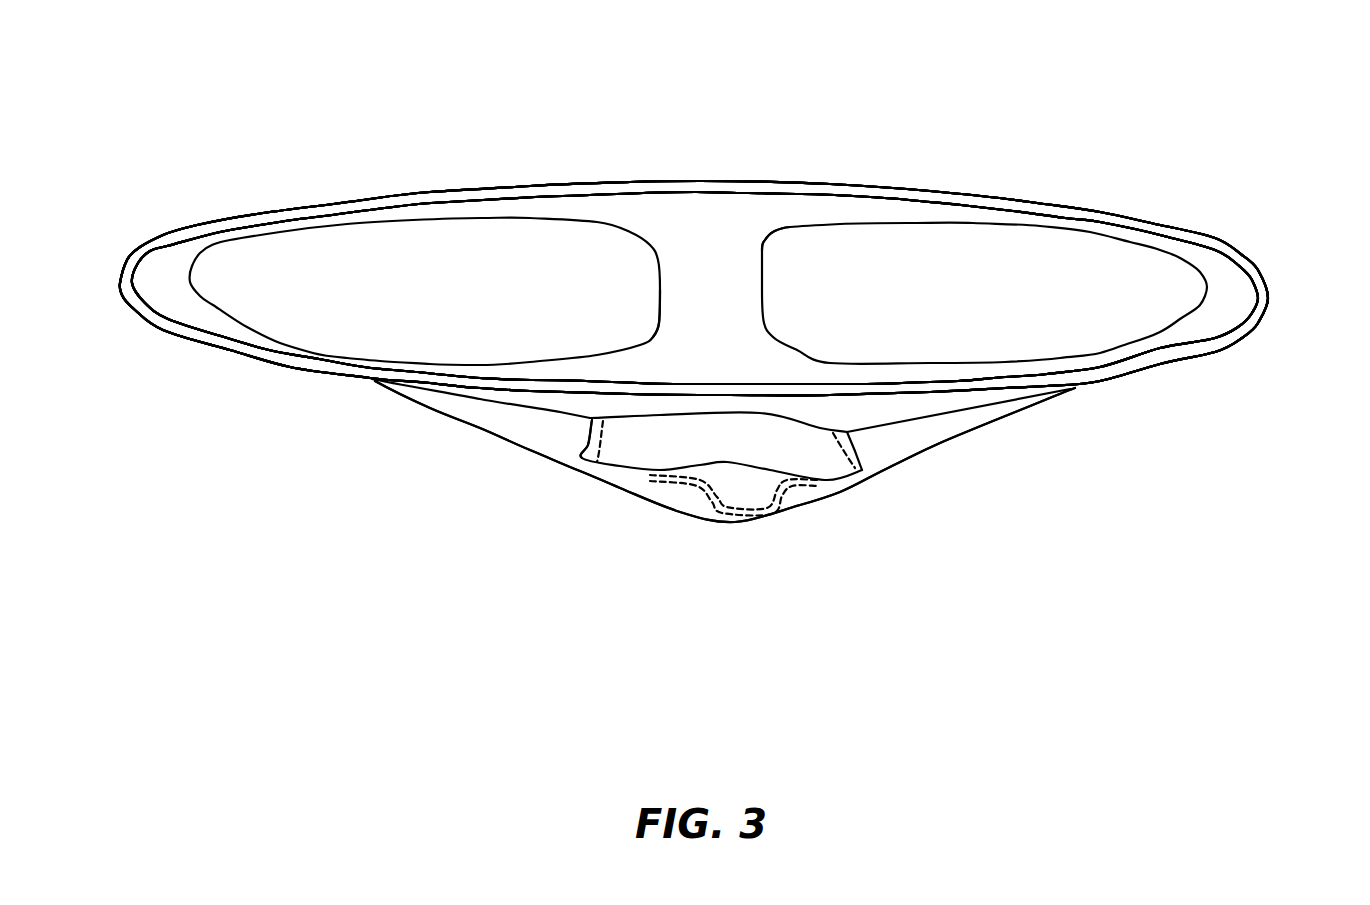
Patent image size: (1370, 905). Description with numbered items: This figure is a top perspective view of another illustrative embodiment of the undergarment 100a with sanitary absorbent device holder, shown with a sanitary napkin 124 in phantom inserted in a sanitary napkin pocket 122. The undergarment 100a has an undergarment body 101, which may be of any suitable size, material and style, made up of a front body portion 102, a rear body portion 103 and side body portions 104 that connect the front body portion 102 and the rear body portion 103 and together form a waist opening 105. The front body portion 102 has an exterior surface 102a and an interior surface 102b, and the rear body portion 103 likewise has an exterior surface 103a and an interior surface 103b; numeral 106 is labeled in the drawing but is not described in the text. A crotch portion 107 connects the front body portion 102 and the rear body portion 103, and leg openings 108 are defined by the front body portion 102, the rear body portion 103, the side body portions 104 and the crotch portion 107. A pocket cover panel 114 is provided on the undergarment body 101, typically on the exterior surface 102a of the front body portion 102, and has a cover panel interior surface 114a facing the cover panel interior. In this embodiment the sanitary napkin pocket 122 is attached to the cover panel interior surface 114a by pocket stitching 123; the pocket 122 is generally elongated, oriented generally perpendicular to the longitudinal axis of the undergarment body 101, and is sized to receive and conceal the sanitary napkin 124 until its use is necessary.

The undergarment 100a is at (342, 124).
The undergarment body 101 is at (1216, 241).
The front body portion 102 is at (512, 390).
The exterior surface 102a is at (300, 368).
The interior surface 102b is at (422, 373).
The rear body portion 103 is at (545, 190).
The exterior surface 103a is at (712, 180).
The interior surface 103b is at (725, 193).
The side body portions 104 is at (122, 285).
The waist opening 105 is at (168, 262).
The frame inner surface 106 is at (187, 326).
The crotch portion 107 is at (745, 282).
The leg openings 108 is at (396, 266).
The pocket cover panel 114 is at (642, 502).
The cover panel interior surface 114a is at (902, 438).
The sanitary napkin pocket 122 is at (713, 433).
The pocket stitching 123 is at (582, 458).
The sanitary napkin 124 is at (747, 488).